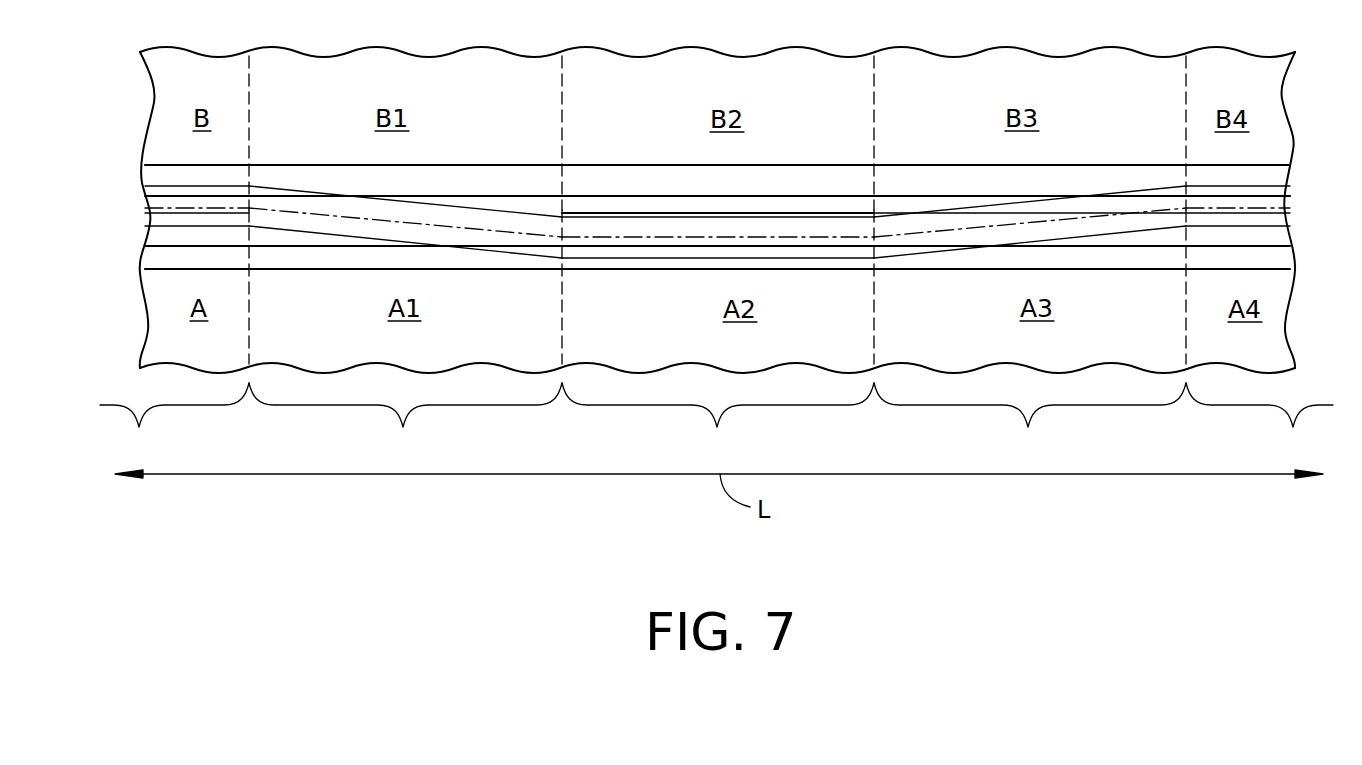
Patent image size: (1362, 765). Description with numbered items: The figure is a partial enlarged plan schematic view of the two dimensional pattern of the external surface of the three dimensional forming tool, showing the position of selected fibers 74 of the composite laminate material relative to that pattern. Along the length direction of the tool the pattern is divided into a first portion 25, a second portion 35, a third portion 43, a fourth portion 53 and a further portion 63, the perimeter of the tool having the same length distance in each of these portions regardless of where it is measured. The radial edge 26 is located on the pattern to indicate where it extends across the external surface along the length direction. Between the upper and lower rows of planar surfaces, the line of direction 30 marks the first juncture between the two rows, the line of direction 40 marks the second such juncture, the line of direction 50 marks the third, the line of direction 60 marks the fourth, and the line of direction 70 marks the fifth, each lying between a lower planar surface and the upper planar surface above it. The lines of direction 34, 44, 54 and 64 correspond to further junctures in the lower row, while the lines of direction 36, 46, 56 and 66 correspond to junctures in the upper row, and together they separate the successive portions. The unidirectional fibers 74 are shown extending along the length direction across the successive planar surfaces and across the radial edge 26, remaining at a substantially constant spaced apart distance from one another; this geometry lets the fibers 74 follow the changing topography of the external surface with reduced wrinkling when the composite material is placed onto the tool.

The first portion 25 is at (141, 427).
The second portion 35 is at (405, 427).
The third portion 43 is at (719, 427).
The fourth portion 53 is at (1030, 427).
The portion 63 is at (1291, 427).
The radial edge 26 is at (182, 175).
The line of direction 30 is at (225, 208).
The line of direction 40 is at (390, 221).
The line of direction 50 is at (656, 238).
The line of direction 60 is at (1058, 220).
The line of direction 70 is at (1207, 207).
The line of direction 34 is at (250, 345).
The line of direction 36 is at (250, 80).
The line of direction 44 is at (563, 351).
The line of direction 46 is at (561, 91).
The line of direction 54 is at (876, 343).
The line of direction 56 is at (873, 91).
The line of direction 64 is at (1185, 335).
The line of direction 66 is at (1185, 90).
The fibers 74 is at (175, 163).